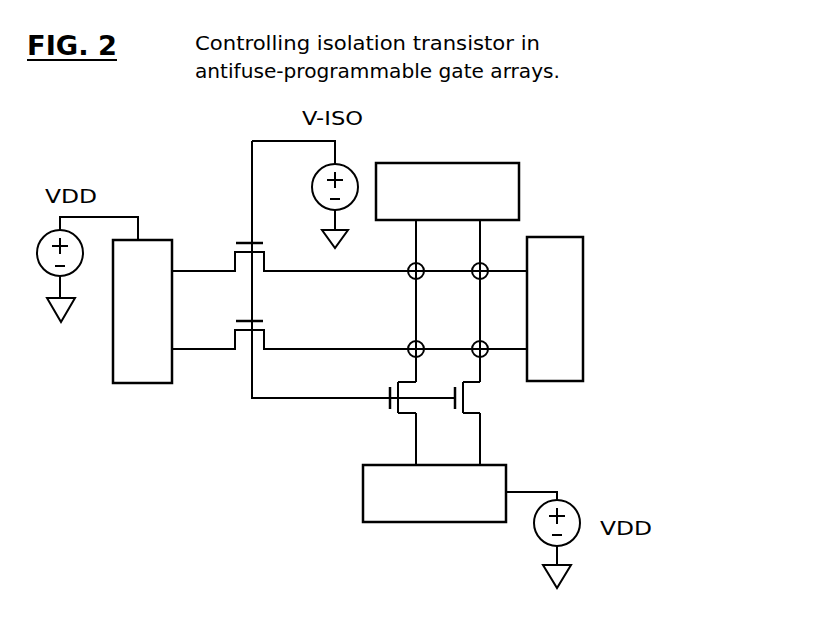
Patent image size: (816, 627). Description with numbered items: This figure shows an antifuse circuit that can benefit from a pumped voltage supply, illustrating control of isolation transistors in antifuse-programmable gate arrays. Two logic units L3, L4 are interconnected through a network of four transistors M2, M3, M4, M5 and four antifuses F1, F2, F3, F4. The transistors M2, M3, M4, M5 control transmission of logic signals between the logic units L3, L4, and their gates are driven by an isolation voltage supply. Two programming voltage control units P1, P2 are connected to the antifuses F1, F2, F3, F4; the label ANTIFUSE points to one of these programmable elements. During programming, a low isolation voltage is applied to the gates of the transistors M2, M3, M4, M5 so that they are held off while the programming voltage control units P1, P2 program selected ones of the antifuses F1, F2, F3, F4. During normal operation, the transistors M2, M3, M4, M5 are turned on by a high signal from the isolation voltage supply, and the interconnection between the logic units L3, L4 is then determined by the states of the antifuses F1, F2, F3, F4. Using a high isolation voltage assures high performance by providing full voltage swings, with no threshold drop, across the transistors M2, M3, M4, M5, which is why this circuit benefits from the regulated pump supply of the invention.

The logic unit L3 is at (157, 238).
The logic unit L4 is at (382, 512).
The programming voltage control unit P1 is at (463, 174).
The programming voltage control unit P2 is at (578, 300).
The antifuse F1 is at (410, 280).
The antifuse F2 is at (489, 257).
The antifuse F3 is at (408, 356).
The antifuse F4 is at (476, 356).
The transistor M2 is at (483, 398).
The transistor M3 is at (390, 411).
The transistor M4 is at (349, 335).
The transistor M5 is at (349, 257).
The antifuse ANTIFUSE is at (572, 240).